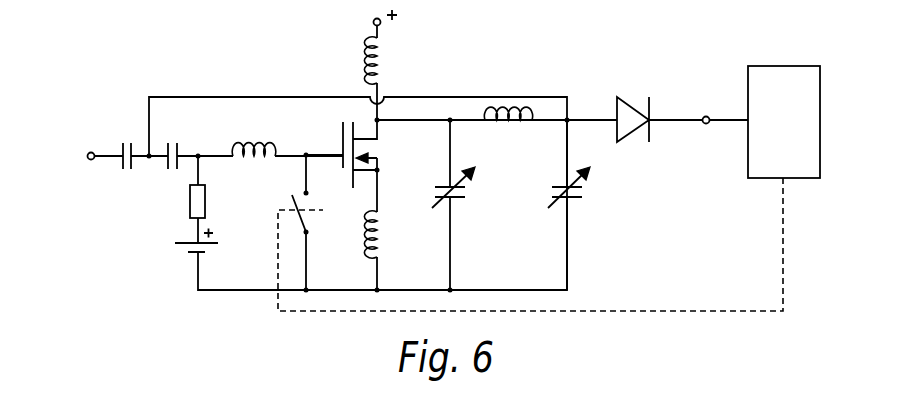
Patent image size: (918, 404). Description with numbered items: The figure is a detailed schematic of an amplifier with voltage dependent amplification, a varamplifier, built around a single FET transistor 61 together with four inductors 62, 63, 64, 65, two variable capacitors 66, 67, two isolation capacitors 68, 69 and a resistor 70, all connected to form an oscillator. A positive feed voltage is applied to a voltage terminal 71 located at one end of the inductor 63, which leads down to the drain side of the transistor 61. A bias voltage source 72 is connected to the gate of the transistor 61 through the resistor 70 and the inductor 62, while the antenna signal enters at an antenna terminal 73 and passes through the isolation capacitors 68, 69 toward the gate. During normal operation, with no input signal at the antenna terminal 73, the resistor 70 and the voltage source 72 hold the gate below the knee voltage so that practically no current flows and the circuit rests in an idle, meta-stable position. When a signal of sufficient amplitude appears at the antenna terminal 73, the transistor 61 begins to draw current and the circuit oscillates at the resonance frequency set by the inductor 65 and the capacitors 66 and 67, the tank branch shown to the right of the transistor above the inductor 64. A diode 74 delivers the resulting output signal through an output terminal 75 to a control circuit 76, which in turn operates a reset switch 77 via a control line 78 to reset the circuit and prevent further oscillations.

The FET transistor 61 is at (342, 147).
The inductor 62 is at (260, 143).
The inductor 63 is at (388, 60).
The inductor 64 is at (390, 232).
The inductor 65 is at (527, 130).
The variable capacitor 66 is at (465, 200).
The variable capacitor 67 is at (575, 200).
The isolation capacitor 68 is at (123, 165).
The isolation capacitor 69 is at (170, 165).
The resistor 70 is at (190, 210).
The voltage terminal 71 is at (373, 22).
The bias voltage source 72 is at (197, 258).
The antenna terminal 73 is at (92, 151).
The diode 74 is at (629, 93).
The output terminal 75 is at (706, 116).
The control circuit 76 is at (760, 180).
The reset switch 77 is at (303, 223).
The control line 78 is at (690, 305).